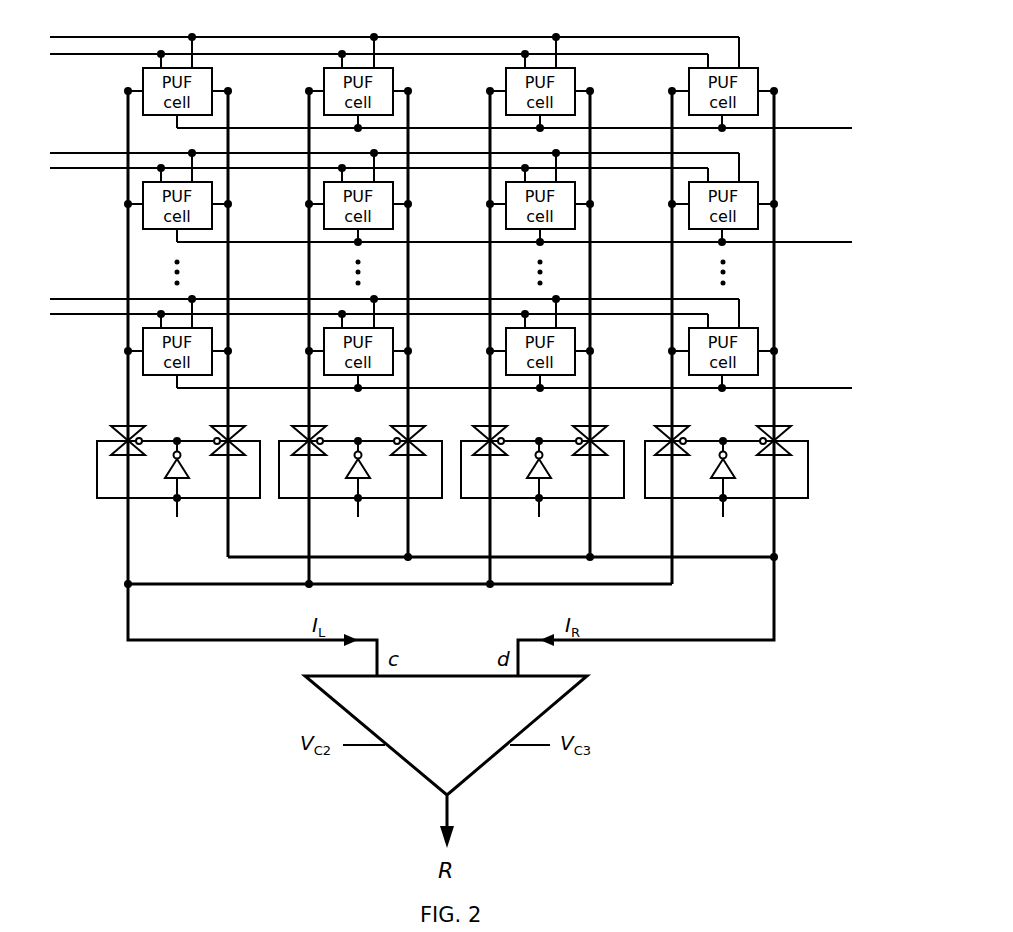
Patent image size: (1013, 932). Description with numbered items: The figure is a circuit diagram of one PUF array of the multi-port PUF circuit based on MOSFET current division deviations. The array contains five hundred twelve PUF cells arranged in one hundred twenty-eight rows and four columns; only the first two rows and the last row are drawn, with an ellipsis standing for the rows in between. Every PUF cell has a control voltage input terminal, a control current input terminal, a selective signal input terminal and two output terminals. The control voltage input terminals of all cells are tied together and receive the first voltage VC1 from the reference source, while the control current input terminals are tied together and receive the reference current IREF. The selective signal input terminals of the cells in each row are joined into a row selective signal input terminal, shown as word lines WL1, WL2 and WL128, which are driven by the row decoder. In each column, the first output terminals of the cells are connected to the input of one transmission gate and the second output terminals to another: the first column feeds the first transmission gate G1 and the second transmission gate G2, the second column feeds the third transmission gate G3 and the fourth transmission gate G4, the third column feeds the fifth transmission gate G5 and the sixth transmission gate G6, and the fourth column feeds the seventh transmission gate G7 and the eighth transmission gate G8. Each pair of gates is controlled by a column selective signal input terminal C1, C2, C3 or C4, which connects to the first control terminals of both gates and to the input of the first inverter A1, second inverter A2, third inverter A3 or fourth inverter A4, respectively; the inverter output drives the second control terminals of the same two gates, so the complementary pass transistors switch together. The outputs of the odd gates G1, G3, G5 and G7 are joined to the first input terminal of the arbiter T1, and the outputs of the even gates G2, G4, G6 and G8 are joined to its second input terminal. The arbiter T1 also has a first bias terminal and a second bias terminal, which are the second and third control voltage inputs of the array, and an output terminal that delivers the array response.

The first transmission gate G1 is at (136, 429).
The second transmission gate G2 is at (220, 429).
The third transmission gate G3 is at (317, 429).
The fourth transmission gate G4 is at (400, 429).
The fifth transmission gate G5 is at (499, 429).
The sixth transmission gate G6 is at (582, 429).
The seventh transmission gate G7 is at (681, 429).
The eighth transmission gate G8 is at (767, 429).
The first inverter A1 is at (191, 477).
The second inverter A2 is at (372, 477).
The third inverter A3 is at (553, 477).
The fourth inverter A4 is at (737, 477).
The arbiter T1 is at (446, 754).
The first column selective signal input terminal C1 is at (176, 534).
The second column selective signal input terminal C2 is at (357, 534).
The third column selective signal input terminal C3 is at (538, 534).
The fourth column selective signal input terminal C4 is at (722, 534).
The first row selective signal input terminal WL1 is at (514, 116).
The second row selective signal input terminal WL2 is at (514, 230).
The one-hundred-twenty-eighth row selective signal input terminal WL128 is at (519, 376).
The first voltage VC1 is at (391, 156).
The reference current IREF is at (376, 197).